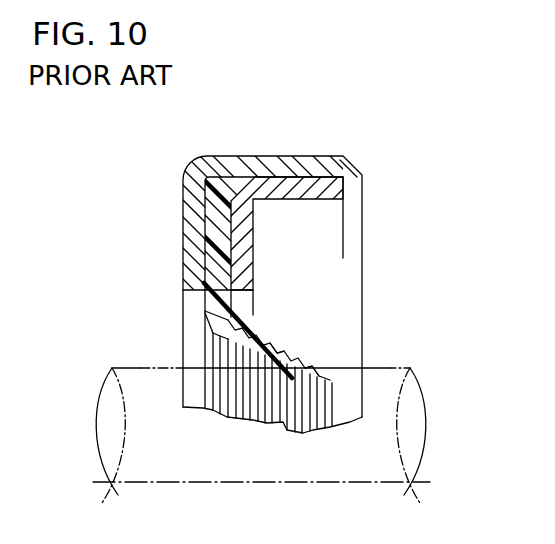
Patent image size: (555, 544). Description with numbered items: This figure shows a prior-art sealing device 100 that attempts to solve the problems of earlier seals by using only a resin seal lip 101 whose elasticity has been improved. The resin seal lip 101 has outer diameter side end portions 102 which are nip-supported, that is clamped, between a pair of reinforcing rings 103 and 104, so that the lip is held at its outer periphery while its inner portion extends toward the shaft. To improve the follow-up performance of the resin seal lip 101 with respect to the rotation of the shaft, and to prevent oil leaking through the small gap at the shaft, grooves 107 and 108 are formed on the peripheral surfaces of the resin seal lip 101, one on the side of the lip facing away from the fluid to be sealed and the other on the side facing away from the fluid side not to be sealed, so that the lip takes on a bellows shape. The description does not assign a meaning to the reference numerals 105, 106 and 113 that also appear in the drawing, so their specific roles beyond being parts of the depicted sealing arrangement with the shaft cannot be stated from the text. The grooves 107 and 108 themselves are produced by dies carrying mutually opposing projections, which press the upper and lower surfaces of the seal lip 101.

The sealing device 100 is at (161, 198).
The resin seal lip 101 is at (253, 333).
The outer diameter side end portions 102 is at (215, 238).
The reinforcing ring 103 is at (304, 162).
The reinforcing ring 104 is at (337, 191).
The helical rib 105 is at (253, 380).
The lip edge 106 is at (280, 338).
The groove 107 is at (284, 398).
The groove 108 is at (317, 363).
The shaft 113 is at (430, 397).